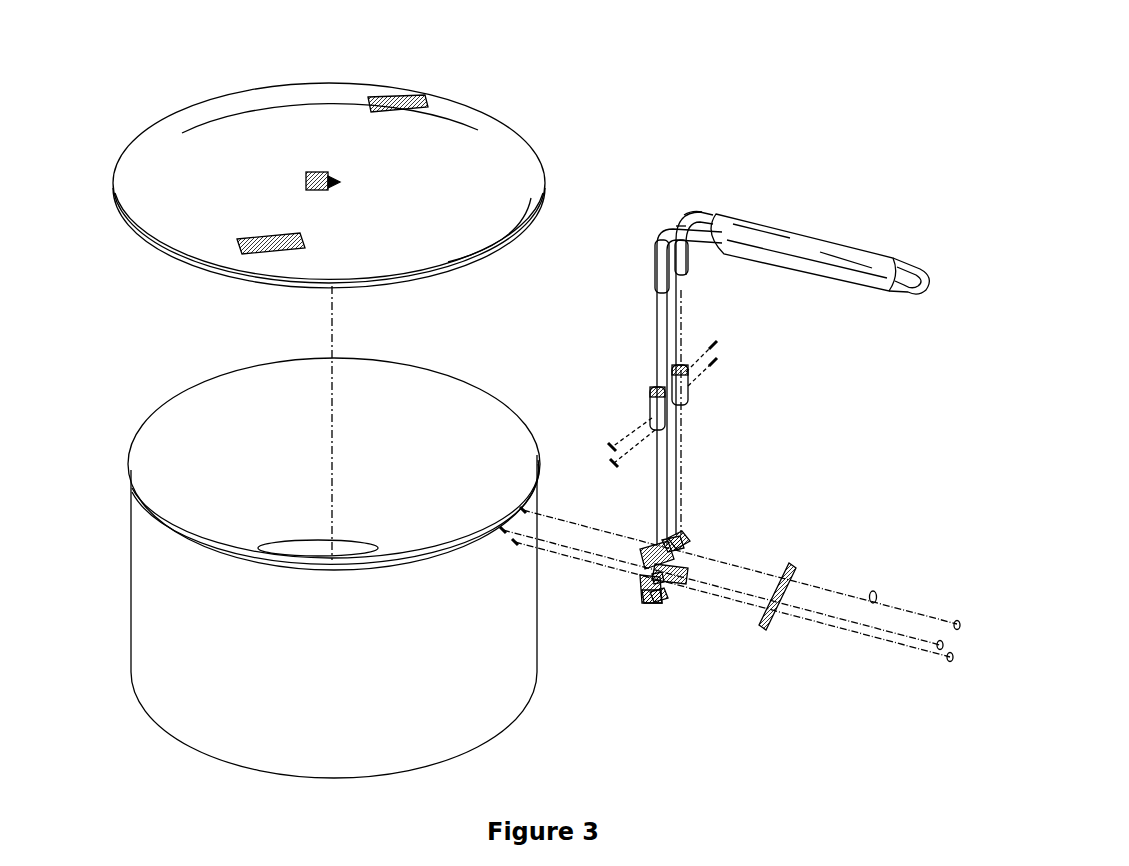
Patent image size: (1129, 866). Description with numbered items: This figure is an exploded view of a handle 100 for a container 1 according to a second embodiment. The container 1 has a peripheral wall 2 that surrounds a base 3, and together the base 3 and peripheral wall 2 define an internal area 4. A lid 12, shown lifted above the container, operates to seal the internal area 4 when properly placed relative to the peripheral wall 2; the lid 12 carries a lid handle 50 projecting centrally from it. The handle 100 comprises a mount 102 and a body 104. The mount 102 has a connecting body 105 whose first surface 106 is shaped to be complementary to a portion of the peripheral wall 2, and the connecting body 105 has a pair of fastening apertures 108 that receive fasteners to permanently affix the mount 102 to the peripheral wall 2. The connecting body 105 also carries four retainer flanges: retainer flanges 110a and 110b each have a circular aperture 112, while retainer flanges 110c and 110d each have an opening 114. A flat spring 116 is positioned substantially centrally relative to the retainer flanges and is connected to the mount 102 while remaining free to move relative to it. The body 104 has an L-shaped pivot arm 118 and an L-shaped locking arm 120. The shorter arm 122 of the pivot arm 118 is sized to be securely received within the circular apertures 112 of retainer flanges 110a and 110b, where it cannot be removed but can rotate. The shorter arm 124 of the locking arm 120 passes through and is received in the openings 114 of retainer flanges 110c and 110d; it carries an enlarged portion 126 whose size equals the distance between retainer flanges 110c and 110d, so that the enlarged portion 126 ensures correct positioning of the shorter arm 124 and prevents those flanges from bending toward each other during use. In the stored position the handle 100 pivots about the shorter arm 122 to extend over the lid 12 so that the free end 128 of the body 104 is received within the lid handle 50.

The container 1 is at (296, 601).
The peripheral wall 2 is at (324, 682).
The base 3 is at (265, 768).
The internal area 4 is at (380, 507).
The lid 12 is at (369, 151).
The lid handle 50 is at (313, 142).
The handle 100 is at (738, 404).
The mount 102 is at (650, 600).
The body 104 is at (843, 209).
The connecting body 105 is at (637, 586).
The first surface 106 is at (640, 572).
The fastening apertures 108 is at (657, 580).
The retainer flange 110a is at (683, 537).
The retainer flange 110b is at (683, 575).
The retainer flange 110c is at (648, 560).
The retainer flange 110d is at (654, 600).
The circular aperture 112 is at (680, 533).
The opening 114 is at (660, 593).
The flat spring 116 is at (795, 575).
The pivot arm 118 is at (694, 211).
The locking arm 120 is at (705, 250).
The shorter arm 122 is at (680, 222).
The shorter arm 124 is at (656, 268).
The enlarged portion 126 is at (651, 406).
The free end 128 is at (931, 263).